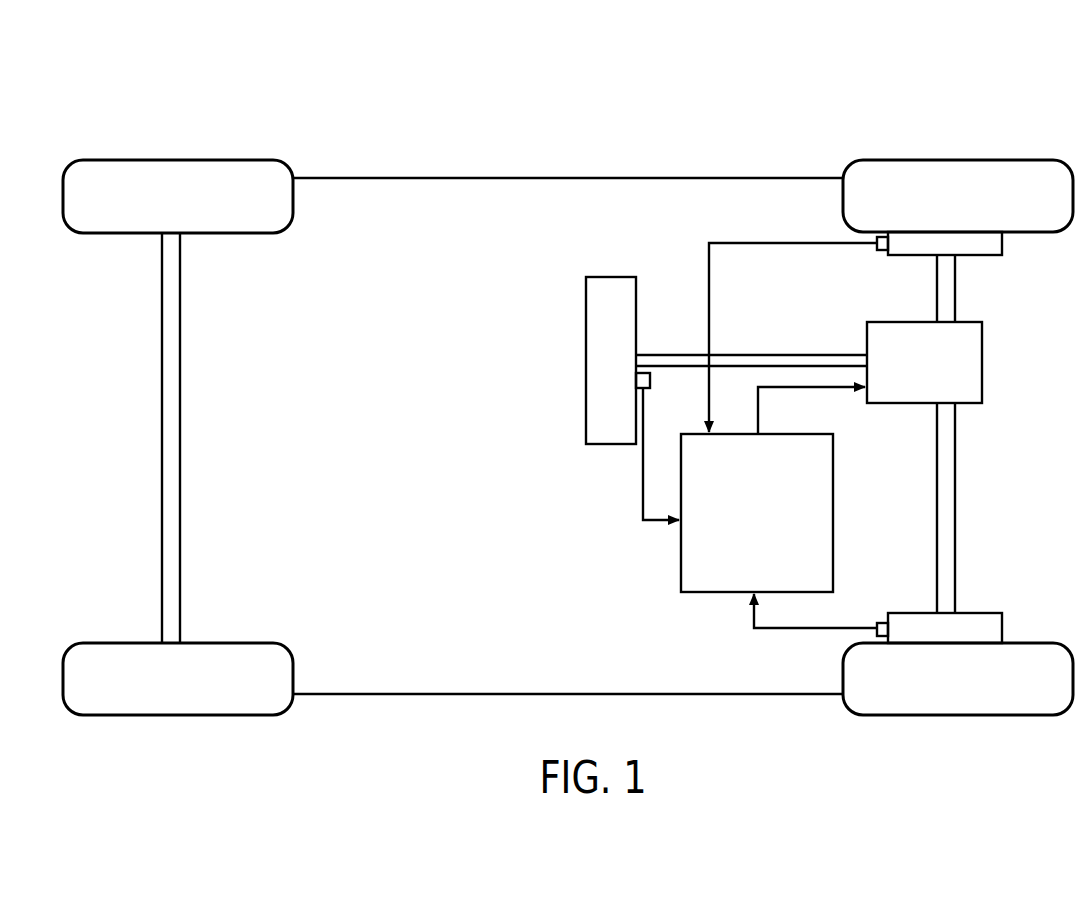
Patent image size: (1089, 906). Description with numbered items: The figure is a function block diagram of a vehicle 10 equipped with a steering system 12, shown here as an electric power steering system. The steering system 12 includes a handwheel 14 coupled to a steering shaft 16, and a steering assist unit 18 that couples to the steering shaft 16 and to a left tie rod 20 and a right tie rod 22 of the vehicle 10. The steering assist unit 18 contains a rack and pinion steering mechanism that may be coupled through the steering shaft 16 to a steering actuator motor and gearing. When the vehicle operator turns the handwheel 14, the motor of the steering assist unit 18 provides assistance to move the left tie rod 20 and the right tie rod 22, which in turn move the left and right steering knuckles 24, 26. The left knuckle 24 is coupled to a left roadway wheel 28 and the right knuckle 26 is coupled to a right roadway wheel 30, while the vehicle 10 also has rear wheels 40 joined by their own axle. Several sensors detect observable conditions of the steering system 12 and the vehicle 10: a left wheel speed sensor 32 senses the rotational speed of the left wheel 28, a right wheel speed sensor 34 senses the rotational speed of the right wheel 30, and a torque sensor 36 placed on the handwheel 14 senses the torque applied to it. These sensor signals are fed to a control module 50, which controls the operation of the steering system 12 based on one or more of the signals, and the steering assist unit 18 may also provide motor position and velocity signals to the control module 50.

The vehicle 10 is at (604, 93).
The steering system 12 is at (760, 213).
The handwheel 14 is at (612, 285).
The steering shaft 16 is at (750, 360).
The steering assist unit 18 is at (977, 362).
The left tie rod 20 is at (950, 298).
The right tie rod 22 is at (950, 490).
The left steering knuckle 24 is at (997, 243).
The right steering knuckle 26 is at (920, 617).
The left roadway wheel 28 is at (955, 160).
The right roadway wheel 30 is at (1027, 650).
The left wheel speed sensor 32 is at (877, 246).
The right wheel speed sensor 34 is at (880, 623).
The torque sensor 36 is at (645, 383).
The rear wheels 40 is at (171, 160).
The control module 50 is at (778, 434).